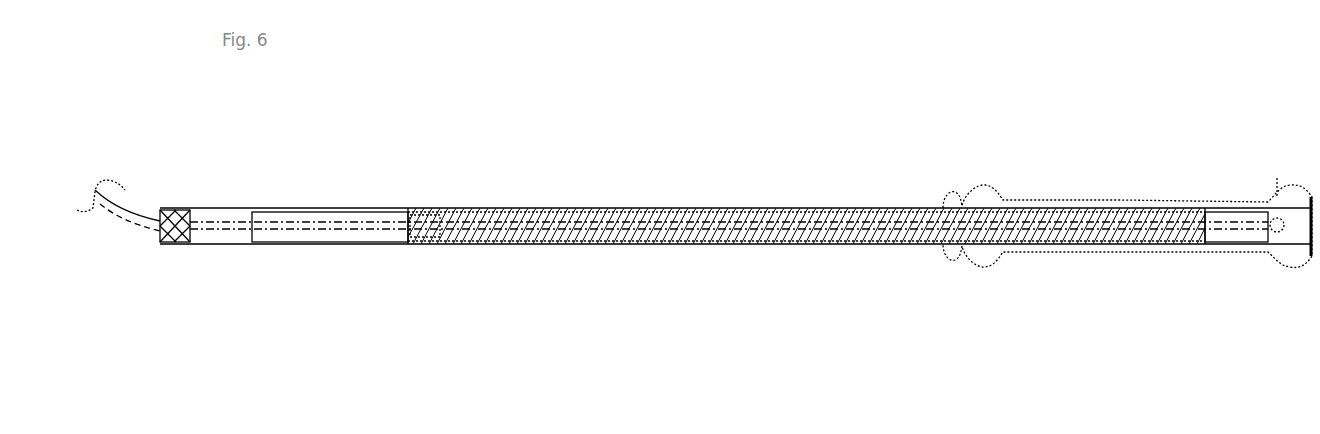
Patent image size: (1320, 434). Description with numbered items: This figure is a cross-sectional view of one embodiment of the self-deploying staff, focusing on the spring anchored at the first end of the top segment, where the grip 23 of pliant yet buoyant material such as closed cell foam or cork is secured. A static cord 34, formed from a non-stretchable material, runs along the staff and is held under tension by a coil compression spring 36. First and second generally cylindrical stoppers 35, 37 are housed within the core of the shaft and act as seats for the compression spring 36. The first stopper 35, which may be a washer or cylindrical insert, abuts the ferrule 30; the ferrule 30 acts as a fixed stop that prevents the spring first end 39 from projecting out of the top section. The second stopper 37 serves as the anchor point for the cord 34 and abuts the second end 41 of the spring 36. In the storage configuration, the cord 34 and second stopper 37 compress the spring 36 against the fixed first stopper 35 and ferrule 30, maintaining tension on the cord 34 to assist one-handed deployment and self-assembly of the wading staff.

The grip 23 is at (1136, 194).
The ferrule 30 is at (312, 233).
The cord 34 is at (125, 208).
The first generally cylindrical stopper 35 is at (406, 233).
The compression spring 36 is at (783, 226).
The second generally cylindrical stopper 37 is at (1232, 235).
The spring first end 39 is at (424, 225).
The second end of the spring 41 is at (1196, 243).